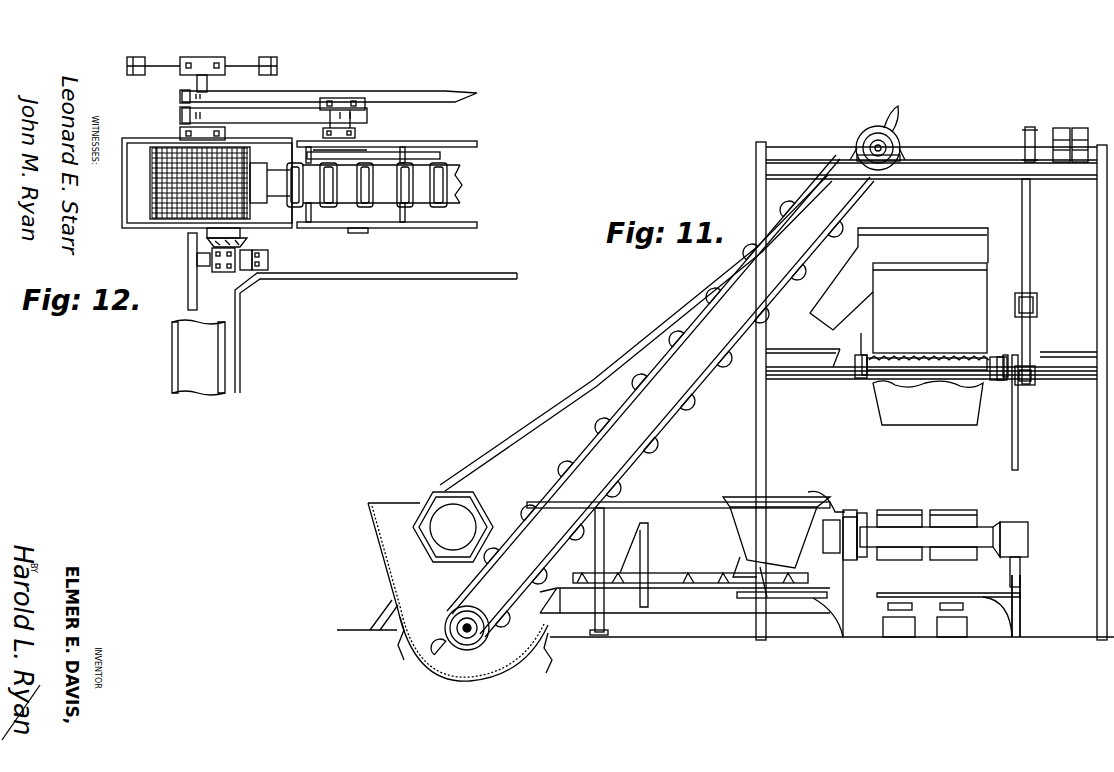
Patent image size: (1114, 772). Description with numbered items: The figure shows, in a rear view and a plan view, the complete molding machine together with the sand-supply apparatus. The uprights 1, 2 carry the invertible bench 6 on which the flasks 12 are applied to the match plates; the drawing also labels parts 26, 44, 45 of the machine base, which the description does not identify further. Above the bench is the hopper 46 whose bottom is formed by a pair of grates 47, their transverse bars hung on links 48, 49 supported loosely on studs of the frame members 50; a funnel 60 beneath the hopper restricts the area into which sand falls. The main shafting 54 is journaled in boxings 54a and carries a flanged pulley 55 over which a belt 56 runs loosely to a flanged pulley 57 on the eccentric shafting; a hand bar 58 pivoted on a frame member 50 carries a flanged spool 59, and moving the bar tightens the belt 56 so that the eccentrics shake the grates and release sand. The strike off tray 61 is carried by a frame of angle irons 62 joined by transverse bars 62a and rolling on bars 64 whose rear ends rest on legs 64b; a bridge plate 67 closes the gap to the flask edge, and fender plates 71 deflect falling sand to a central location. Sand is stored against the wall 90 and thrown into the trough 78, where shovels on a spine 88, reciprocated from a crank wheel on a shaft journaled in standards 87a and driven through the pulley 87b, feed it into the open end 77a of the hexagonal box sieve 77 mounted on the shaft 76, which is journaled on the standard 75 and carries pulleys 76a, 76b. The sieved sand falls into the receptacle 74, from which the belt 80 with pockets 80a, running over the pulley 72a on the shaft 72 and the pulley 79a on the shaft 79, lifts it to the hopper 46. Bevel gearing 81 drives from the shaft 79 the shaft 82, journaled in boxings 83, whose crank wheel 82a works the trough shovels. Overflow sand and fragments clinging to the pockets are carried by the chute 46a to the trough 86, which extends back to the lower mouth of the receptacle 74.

In FIG. 11, the upright 1 is at (844, 568).
In FIG. 11, the upright 2 is at (1021, 570).
In FIG. 11, the invertible bench 6 is at (982, 548).
In FIG. 11, the flasks 12 is at (945, 510).
In FIG. 11, the slots 26 is at (940, 607).
In FIG. 11, the bar 44 is at (792, 598).
In FIG. 11, the plate 45 is at (948, 597).
In FIG. 11, the hopper 46 is at (923, 290).
In FIG. 11, the chute 46a is at (841, 288).
In FIG. 11, the grates 47 is at (920, 358).
In FIG. 11, the links 48 is at (860, 380).
In FIG. 11, the links 49 is at (864, 352).
In FIG. 11, the frame members 50 is at (993, 357).
In FIG. 11, the main shafting 54 is at (938, 160).
In FIG. 11, the boxings 54a is at (756, 147).
In FIG. 11, the flanged pulley 55 is at (1022, 131).
In FIG. 11, the belt 56 is at (1031, 193).
In FIG. 11, the flanged pulley 57 is at (1034, 383).
In FIG. 11, the hand bar 58 is at (1018, 466).
In FIG. 11, the flanged spool 59 is at (1036, 300).
In FIG. 11, the funnel 60 is at (888, 412).
In FIG. 11, the strike off tray 61 is at (767, 507).
In FIG. 12, the angle irons 62 is at (330, 228).
In FIG. 11, the angle irons 62 is at (660, 396).
In FIG. 12, the transverse bars 62a is at (311, 216).
In FIG. 12, the bars 64 is at (372, 232).
In FIG. 11, the bars 64 is at (680, 508).
In FIG. 11, the legs 64b is at (606, 622).
In FIG. 11, the bridge plate 67 is at (865, 506).
In FIG. 11, the fender plates 71 is at (773, 552).
In FIG. 11, the shaft 72 is at (862, 130).
In FIG. 11, the pulley 72a is at (900, 124).
In FIG. 12, the receptacle 74 is at (247, 147).
In FIG. 11, the receptacle 74 is at (388, 572).
In FIG. 12, the standard 75 is at (240, 66).
In FIG. 11, the standard 75 is at (368, 612).
In FIG. 12, the shaft 76 is at (203, 57).
In FIG. 12, the pulley 76a is at (181, 93).
In FIG. 12, the pulley 76b is at (235, 91).
In FIG. 12, the box sieve 77 is at (150, 186).
In FIG. 11, the box sieve 77 is at (418, 497).
In FIG. 11, the open end 77a is at (453, 527).
In FIG. 12, the trough 78 is at (172, 362).
In FIG. 12, the shaft 79 is at (242, 233).
In FIG. 11, the shaft 79 is at (467, 632).
In FIG. 11, the pulley 79a is at (475, 635).
In FIG. 12, the belt 80 is at (382, 185).
In FIG. 11, the belt 80 is at (708, 377).
In FIG. 12, the pockets 80a is at (333, 170).
In FIG. 11, the pockets 80a is at (585, 450).
In FIG. 12, the bevel gearing 81 is at (243, 243).
In FIG. 12, the shaft 82 is at (210, 272).
In FIG. 12, the crank wheel 82a is at (188, 256).
In FIG. 12, the boxings 83 is at (230, 268).
In FIG. 11, the trough 86 is at (685, 600).
In FIG. 12, the standards 87a is at (356, 133).
In FIG. 12, the pulley 87b is at (318, 98).
In FIG. 11, the spine 88 is at (658, 576).
In FIG. 12, the wall 90 is at (400, 279).